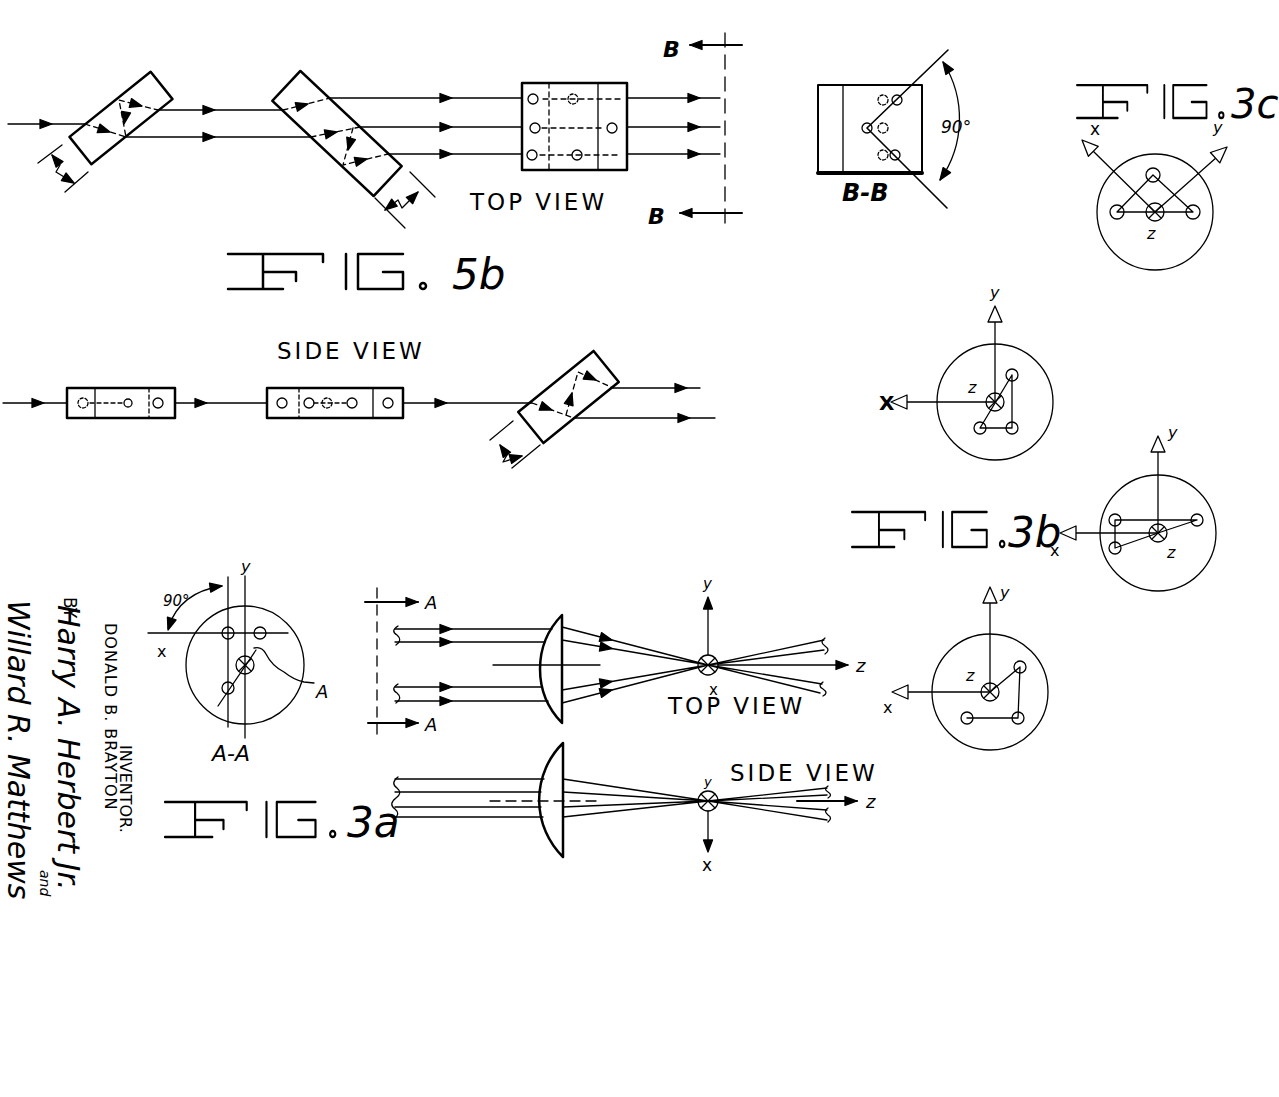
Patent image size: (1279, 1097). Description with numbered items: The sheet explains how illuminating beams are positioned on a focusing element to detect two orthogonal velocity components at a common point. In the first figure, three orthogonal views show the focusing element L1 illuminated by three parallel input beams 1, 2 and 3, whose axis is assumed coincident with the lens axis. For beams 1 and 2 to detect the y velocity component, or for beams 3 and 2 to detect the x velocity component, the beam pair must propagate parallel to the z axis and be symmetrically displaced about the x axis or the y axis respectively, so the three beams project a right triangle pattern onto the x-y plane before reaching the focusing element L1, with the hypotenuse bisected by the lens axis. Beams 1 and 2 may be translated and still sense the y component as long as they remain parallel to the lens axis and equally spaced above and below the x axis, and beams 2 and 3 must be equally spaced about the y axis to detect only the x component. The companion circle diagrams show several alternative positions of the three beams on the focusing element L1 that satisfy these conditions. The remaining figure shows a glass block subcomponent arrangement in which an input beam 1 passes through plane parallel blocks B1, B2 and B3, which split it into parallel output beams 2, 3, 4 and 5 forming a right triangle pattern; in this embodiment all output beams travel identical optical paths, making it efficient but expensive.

In FIG. 5B, the input beam 1 is at (44, 253).
In FIG. 3A, the input beam 1 is at (626, 750).
In FIG. 3B, the input beam 1 is at (1069, 464).
In FIG. 5B, the input beam 2 is at (535, 240).
In FIG. 3A, the input beam 2 is at (623, 660).
In FIG. 3B, the input beam 2 is at (1068, 472).
In FIG. 3C, the input beam 2 is at (1145, 176).
In FIG. 5B, the input beam 3 is at (217, 129).
In FIG. 3A, the input beam 3 is at (613, 709).
In FIG. 3B, the input beam 3 is at (1081, 472).
In FIG. 5B, the fourth light beam 4 is at (616, 255).
In FIG. 3C, the fourth light beam 4 is at (1117, 222).
In FIG. 5B, the fifth light beam 5 is at (650, 277).
In FIG. 3C, the fifth light beam 5 is at (1193, 222).
In FIG. 5B, the first beam splitter block B1 is at (110, 150).
In FIG. 5B, the second beam splitter block B2 is at (347, 172).
In FIG. 5B, the third beam splitter block B3 is at (630, 165).
In FIG. 3A, the focusing element L1 is at (266, 628).
In FIG. 3B, the focusing element L1 is at (1040, 357).